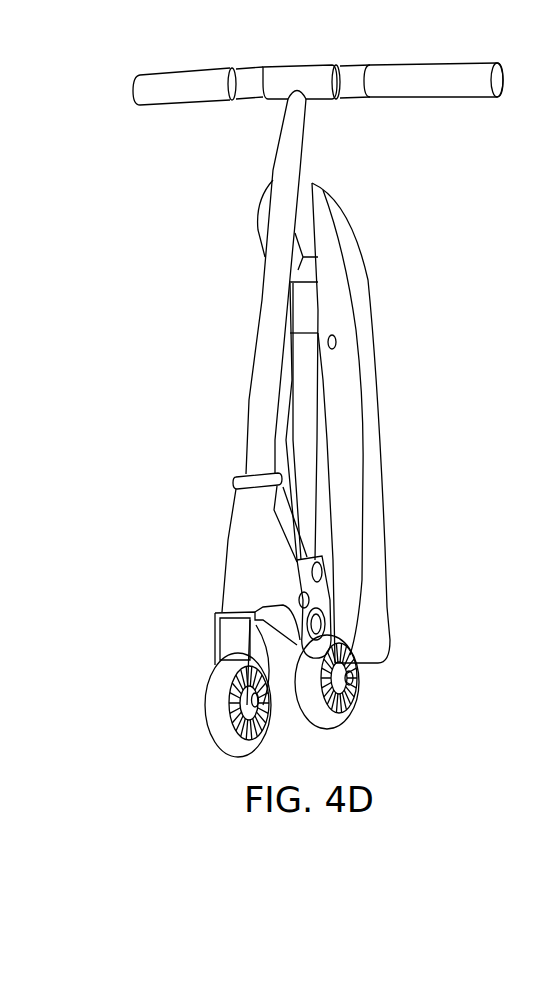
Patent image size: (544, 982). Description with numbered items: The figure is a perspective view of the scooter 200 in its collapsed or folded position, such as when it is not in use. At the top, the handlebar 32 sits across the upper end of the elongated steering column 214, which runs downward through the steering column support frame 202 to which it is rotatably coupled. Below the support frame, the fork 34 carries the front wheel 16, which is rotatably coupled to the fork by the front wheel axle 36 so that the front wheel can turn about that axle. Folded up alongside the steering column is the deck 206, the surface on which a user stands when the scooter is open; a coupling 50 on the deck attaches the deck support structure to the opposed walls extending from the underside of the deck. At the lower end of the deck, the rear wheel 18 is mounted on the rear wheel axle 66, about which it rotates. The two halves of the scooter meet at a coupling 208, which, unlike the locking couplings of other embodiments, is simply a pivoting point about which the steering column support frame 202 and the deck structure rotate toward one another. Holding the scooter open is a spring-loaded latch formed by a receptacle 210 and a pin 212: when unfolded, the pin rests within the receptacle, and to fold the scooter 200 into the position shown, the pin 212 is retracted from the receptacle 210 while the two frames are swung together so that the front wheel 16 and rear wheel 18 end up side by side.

The scooter 200 is at (176, 191).
The handlebar 32 is at (415, 63).
The steering column 214 is at (257, 350).
The deck 206 is at (432, 392).
The coupling 50 is at (338, 343).
The steering column support frame 202 is at (236, 532).
The receptacle 210 is at (320, 622).
The pin 212 is at (322, 572).
The coupling 208 is at (298, 600).
The fork 34 is at (212, 632).
The front wheel 16 is at (212, 740).
The front wheel axle 36 is at (259, 703).
The rear wheel 18 is at (340, 725).
The rear wheel axle 66 is at (354, 680).